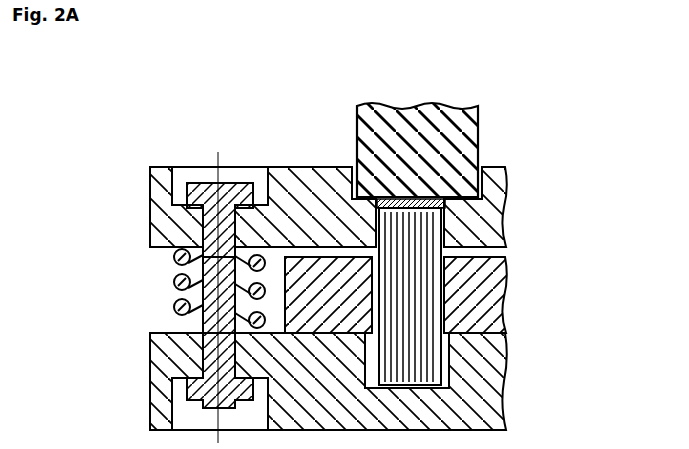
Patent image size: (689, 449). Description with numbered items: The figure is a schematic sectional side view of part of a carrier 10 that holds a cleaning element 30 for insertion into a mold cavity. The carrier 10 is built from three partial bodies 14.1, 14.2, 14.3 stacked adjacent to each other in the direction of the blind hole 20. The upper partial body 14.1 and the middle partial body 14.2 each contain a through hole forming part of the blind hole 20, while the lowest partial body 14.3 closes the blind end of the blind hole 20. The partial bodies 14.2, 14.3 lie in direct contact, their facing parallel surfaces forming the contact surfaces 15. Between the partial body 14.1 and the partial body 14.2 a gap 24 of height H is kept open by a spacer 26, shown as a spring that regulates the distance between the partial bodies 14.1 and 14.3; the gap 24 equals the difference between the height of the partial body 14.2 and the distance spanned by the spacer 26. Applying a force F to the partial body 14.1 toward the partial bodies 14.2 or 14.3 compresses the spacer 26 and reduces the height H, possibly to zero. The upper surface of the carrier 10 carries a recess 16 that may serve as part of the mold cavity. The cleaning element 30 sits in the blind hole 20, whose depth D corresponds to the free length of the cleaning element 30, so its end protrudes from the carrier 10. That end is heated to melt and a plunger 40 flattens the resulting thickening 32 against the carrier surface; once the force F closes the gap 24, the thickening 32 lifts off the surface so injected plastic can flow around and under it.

The carrier 10 is at (283, 143).
The partial body 14.1 is at (183, 212).
The partial body 14.2 is at (460, 283).
The partial body 14.3 is at (193, 345).
The contact surfaces 15 is at (507, 337).
The recess 16 is at (489, 182).
The blind hole 20 is at (416, 381).
The gap 24 is at (173, 250).
The spacer 26 is at (168, 288).
The cleaning element 30 is at (399, 308).
The thickening 32 is at (456, 203).
The plunger 40 is at (452, 155).
The force F is at (298, 113).
The height of the gap H is at (505, 247).
The depth of the blind hole D is at (365, 388).